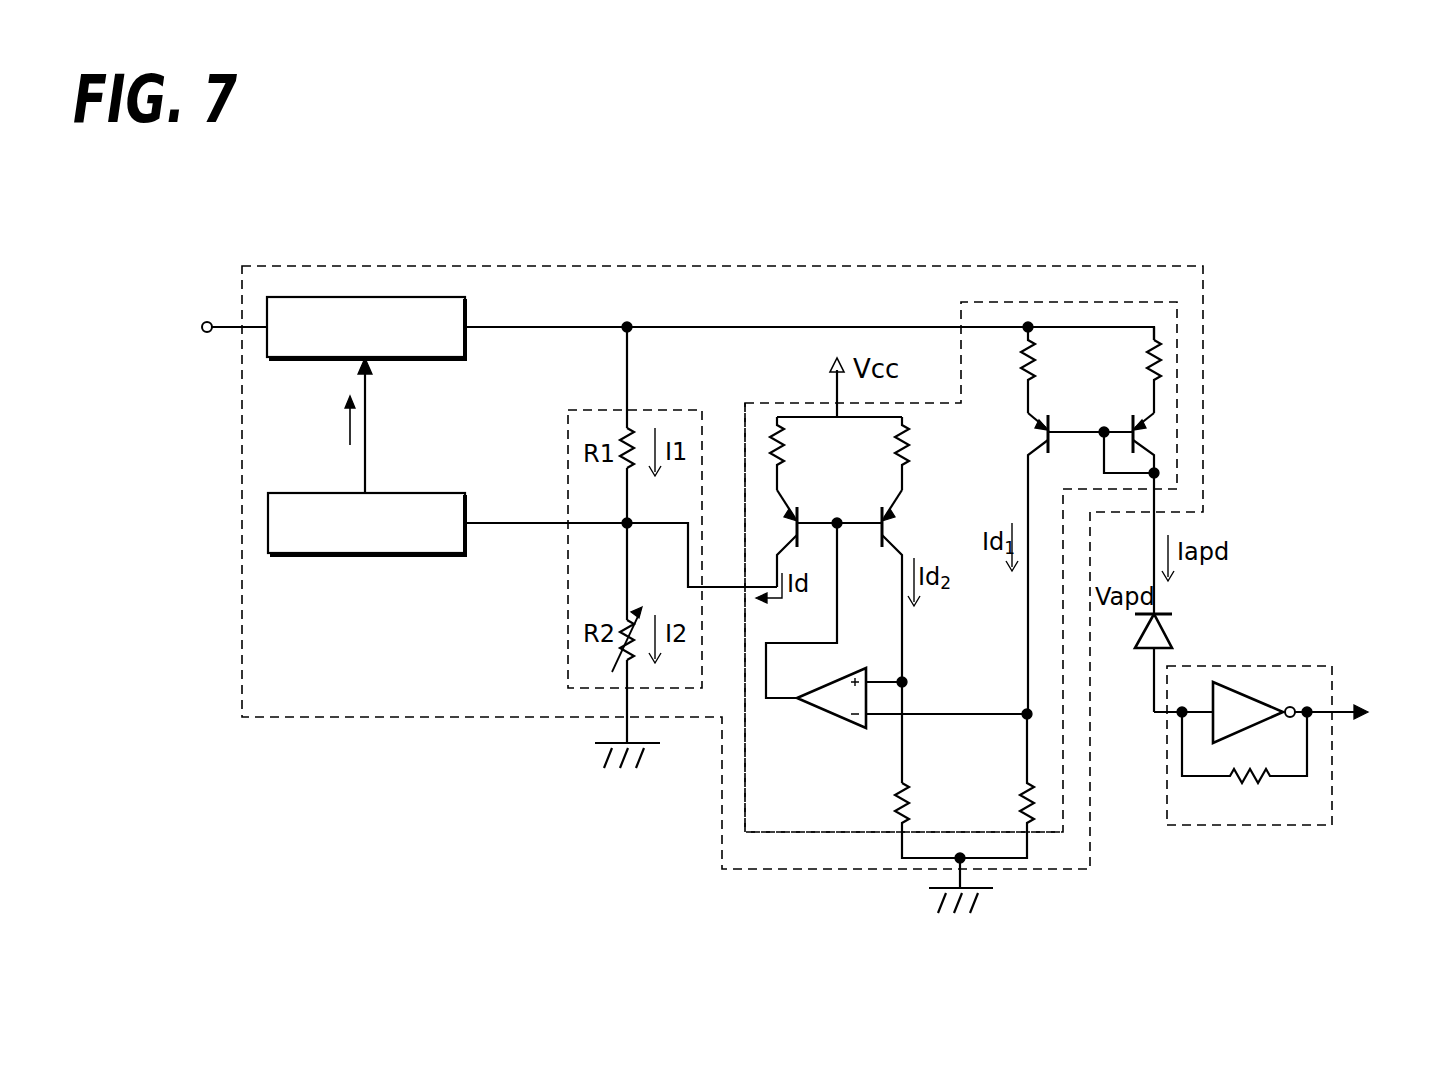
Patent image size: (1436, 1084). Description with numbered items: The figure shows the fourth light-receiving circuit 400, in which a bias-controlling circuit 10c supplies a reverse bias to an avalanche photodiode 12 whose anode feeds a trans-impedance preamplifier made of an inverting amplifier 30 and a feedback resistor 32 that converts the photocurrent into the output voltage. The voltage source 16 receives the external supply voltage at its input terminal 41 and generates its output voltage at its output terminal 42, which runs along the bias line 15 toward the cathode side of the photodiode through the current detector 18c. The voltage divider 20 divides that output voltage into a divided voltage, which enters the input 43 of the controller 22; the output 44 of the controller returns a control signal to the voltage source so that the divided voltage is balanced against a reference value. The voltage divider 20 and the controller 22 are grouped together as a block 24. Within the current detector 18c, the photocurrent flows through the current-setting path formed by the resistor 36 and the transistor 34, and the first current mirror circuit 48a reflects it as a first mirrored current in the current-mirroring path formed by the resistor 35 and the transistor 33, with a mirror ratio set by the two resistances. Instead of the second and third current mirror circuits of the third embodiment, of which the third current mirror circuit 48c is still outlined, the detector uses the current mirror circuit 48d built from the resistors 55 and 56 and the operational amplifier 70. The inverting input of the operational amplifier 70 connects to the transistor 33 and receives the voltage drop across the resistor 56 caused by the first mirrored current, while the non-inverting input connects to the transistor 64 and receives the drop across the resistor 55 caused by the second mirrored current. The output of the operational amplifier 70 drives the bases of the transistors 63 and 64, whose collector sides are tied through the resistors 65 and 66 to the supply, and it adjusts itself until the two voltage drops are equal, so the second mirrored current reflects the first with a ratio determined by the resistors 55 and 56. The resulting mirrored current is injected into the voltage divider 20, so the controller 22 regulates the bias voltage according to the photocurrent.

The light-receiving circuit 400 is at (1343, 219).
The bias circuit 10c is at (1063, 266).
The avalanche photodiode 12 is at (1166, 632).
The bias line 15 is at (780, 327).
The voltage source 16 is at (367, 297).
The current detector 18c is at (1177, 413).
The voltage divider 20 is at (566, 578).
The controller 22 is at (397, 555).
The control unit 24 is at (503, 625).
The inverting amplifier 30 is at (1237, 705).
The feedback resistor 32 is at (1233, 790).
The transistor 33 is at (1049, 456).
The transistor 34 is at (1132, 413).
The resistor 35 is at (1024, 340).
The resistor 36 is at (1165, 347).
The input terminal 41 is at (207, 321).
The output terminal 42 is at (468, 333).
The input 43 is at (466, 523).
The output 44 is at (367, 493).
The first current mirror circuit 48a is at (1160, 318).
The third current mirror circuit 48c is at (759, 630).
The current mirror circuit 48d is at (836, 785).
The resistor 55 is at (890, 822).
The resistor 56 is at (1032, 822).
The transistor 63 is at (799, 505).
The transistor 64 is at (880, 545).
The resistor 65 is at (774, 423).
The resistor 66 is at (913, 431).
The operational amplifier 70 is at (853, 665).